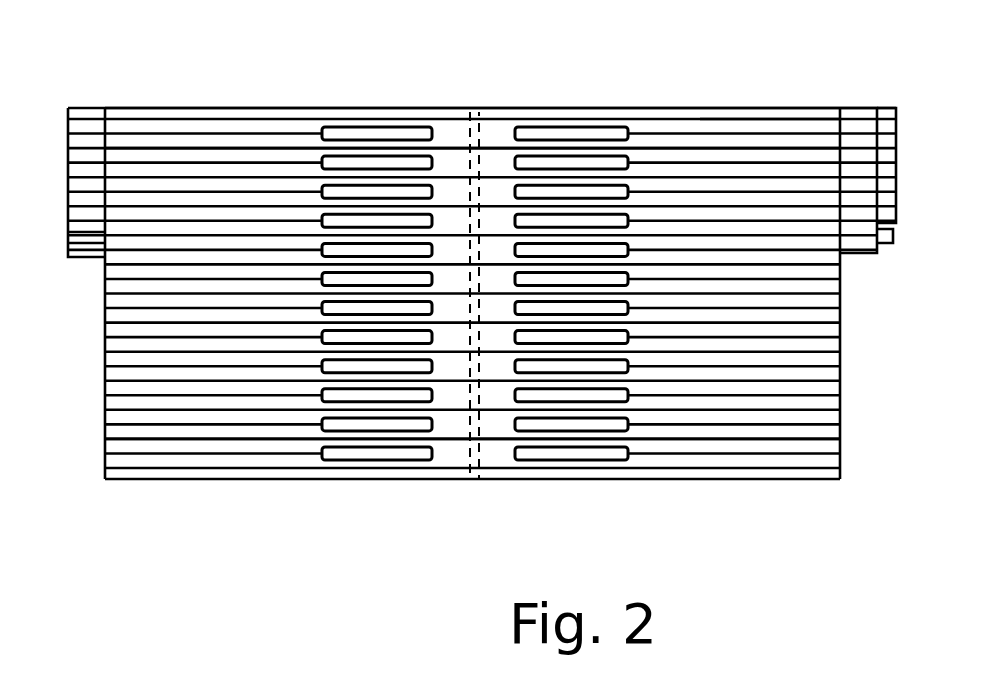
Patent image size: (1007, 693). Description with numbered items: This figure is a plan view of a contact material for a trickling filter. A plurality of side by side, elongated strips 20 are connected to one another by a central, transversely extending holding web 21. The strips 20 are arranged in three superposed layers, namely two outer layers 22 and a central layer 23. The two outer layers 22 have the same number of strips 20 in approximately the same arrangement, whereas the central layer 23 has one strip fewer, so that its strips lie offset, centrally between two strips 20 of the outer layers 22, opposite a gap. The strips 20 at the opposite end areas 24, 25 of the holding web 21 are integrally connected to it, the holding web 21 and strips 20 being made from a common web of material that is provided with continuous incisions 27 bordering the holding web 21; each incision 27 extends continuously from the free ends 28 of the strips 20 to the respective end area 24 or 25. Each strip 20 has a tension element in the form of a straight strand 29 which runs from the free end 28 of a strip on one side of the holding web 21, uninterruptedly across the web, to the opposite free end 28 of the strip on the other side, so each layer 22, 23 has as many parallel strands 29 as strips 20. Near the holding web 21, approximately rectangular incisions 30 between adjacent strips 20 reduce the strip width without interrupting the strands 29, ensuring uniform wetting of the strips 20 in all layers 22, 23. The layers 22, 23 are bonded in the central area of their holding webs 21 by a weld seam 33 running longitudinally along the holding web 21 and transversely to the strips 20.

The elongated strip 20 is at (168, 108).
The holding web 21 is at (495, 133).
The outer layer 22 is at (732, 130).
The central layer 23 is at (853, 118).
The end area of the holding web 24 is at (440, 458).
The end area of the holding web 25 is at (522, 462).
The incision 27 is at (733, 457).
The free end 28 is at (70, 232).
The strand 29 is at (240, 148).
The incision 30 is at (362, 133).
The weld seam 33 is at (470, 120).